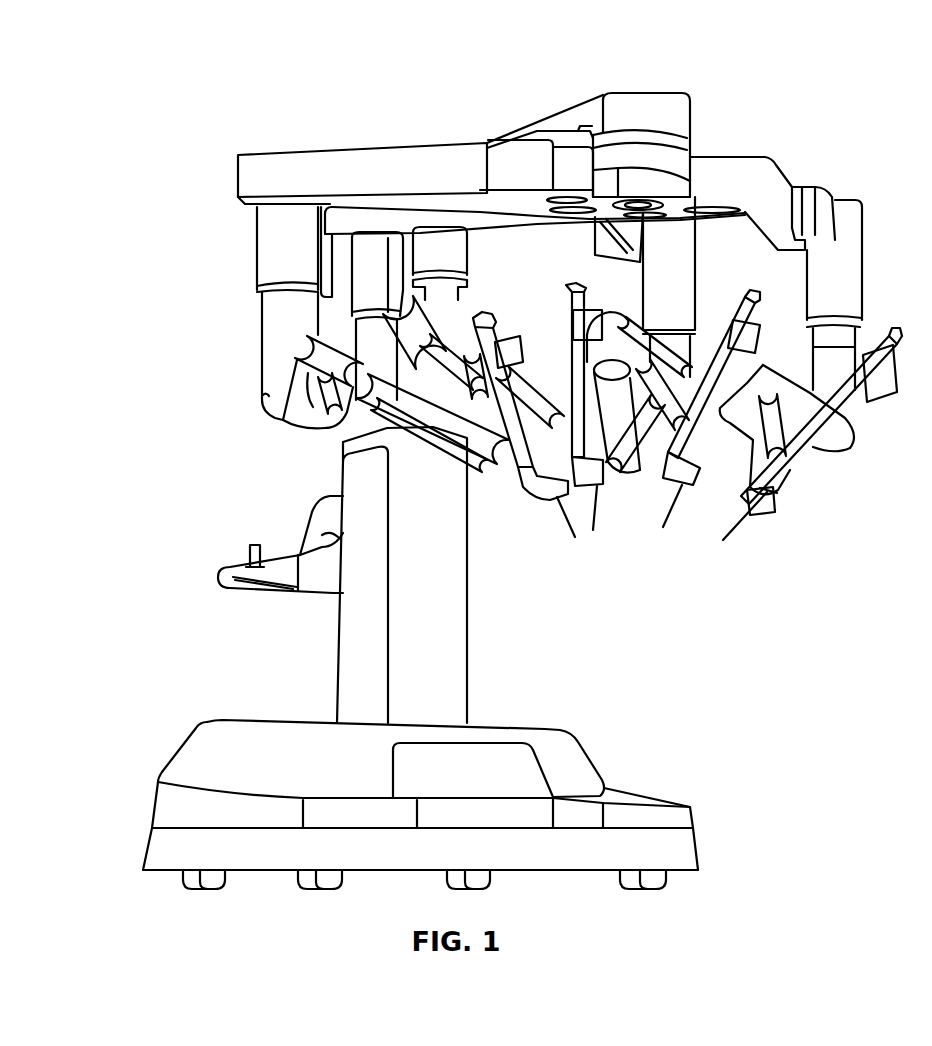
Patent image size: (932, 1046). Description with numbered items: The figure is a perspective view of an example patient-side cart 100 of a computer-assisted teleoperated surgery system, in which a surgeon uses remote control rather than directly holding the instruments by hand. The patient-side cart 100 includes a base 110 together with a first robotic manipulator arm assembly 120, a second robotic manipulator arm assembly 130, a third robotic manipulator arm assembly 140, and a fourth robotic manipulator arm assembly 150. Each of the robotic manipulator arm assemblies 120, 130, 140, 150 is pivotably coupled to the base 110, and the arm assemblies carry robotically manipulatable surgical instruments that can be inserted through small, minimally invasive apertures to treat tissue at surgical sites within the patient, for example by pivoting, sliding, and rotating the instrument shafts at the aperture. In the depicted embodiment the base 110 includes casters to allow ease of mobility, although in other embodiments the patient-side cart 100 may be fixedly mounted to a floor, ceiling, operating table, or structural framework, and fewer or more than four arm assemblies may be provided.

The patient-side cart 100 is at (372, 122).
The base 110 is at (660, 93).
The first robotic manipulator arm assembly 120 is at (290, 421).
The second robotic manipulator arm assembly 130 is at (470, 308).
The third robotic manipulator arm assembly 140 is at (702, 270).
The fourth robotic manipulator arm assembly 150 is at (807, 460).